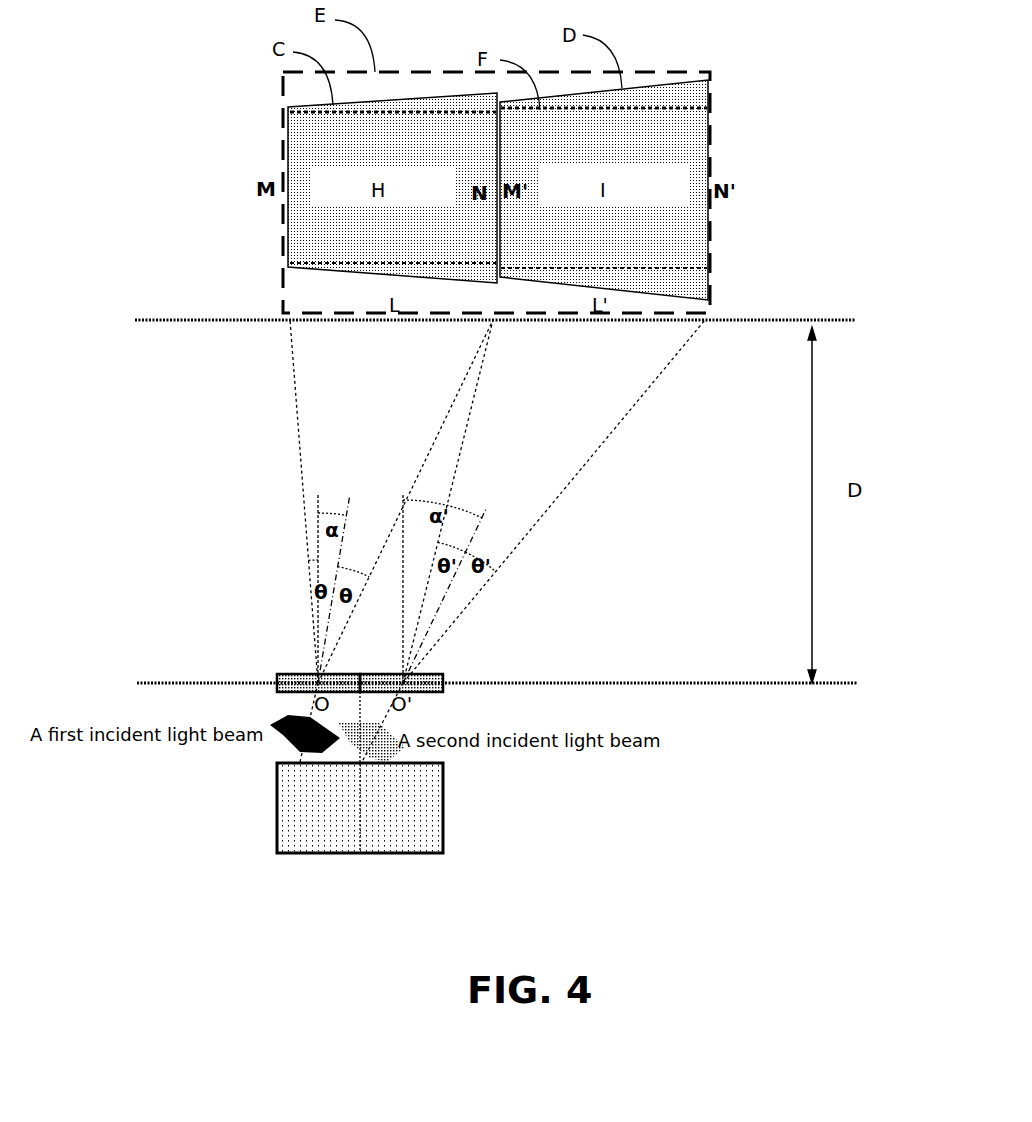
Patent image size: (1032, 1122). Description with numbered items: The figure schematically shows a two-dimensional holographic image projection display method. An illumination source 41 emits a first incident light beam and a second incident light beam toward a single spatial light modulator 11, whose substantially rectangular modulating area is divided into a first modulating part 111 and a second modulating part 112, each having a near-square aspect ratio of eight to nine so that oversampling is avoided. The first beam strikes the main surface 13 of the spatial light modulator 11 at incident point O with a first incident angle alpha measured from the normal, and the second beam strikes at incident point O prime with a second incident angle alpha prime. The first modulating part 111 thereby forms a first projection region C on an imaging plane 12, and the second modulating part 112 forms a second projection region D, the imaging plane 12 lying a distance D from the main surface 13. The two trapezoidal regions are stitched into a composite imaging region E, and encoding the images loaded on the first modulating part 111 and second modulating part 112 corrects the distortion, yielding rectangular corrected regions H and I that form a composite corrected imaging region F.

The spatial light modulator 11 is at (282, 623).
The first modulating part 111 is at (300, 674).
The second modulating part 112 is at (382, 674).
The imaging plane 12 is at (740, 319).
The main surface 13 is at (847, 683).
The illumination source 41 is at (443, 820).